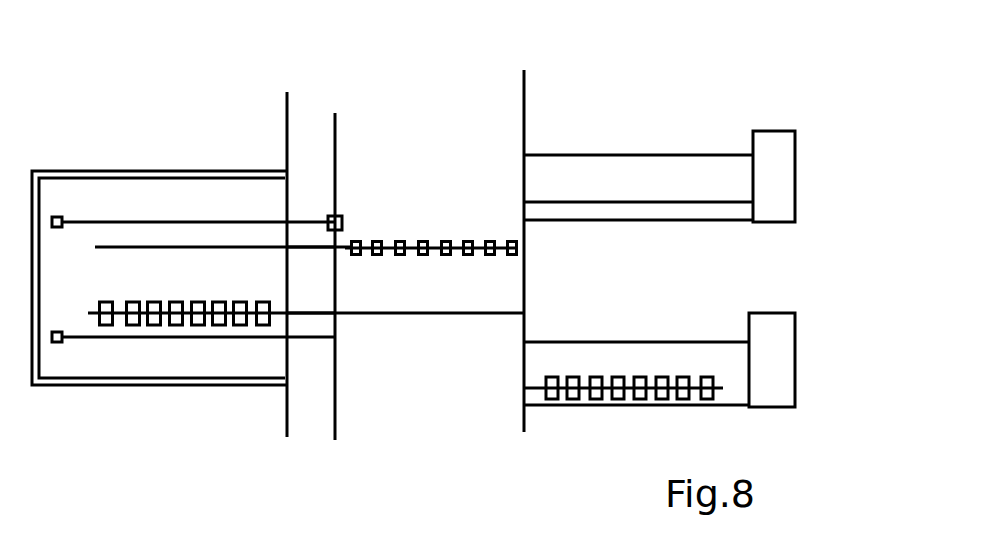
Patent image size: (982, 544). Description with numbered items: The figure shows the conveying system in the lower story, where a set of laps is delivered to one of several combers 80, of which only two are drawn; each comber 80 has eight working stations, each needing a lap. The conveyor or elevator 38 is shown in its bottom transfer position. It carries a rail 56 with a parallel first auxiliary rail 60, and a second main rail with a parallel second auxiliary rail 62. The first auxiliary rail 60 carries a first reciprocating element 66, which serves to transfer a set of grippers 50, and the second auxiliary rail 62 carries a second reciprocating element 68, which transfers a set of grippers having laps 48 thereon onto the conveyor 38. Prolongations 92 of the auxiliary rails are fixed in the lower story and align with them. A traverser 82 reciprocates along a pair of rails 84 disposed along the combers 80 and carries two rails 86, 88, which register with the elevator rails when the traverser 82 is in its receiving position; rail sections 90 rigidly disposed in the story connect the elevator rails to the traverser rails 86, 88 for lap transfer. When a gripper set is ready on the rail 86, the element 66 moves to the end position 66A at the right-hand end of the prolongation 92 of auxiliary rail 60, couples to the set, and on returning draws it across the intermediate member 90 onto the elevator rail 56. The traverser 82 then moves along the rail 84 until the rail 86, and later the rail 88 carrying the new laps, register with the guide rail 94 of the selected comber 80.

The conveyor 38 is at (163, 152).
The first reciprocating element 66 is at (59, 212).
The first auxiliary rail 60 is at (245, 216).
The end position 66A is at (347, 216).
The rail 56 is at (100, 249).
The grippers 50 is at (408, 238).
The traverser rail 86 is at (486, 242).
The laps 48 is at (128, 299).
The traverser rail 88 is at (383, 318).
The second auxiliary rail 62 is at (246, 341).
The second reciprocating element 68 is at (62, 347).
The prolongations 92 is at (300, 222).
The rail sections 90 is at (314, 253).
The rails 84 is at (521, 123).
The traverser 82 is at (461, 318).
The guide rail 94 is at (656, 204).
The comber 80 is at (799, 184).